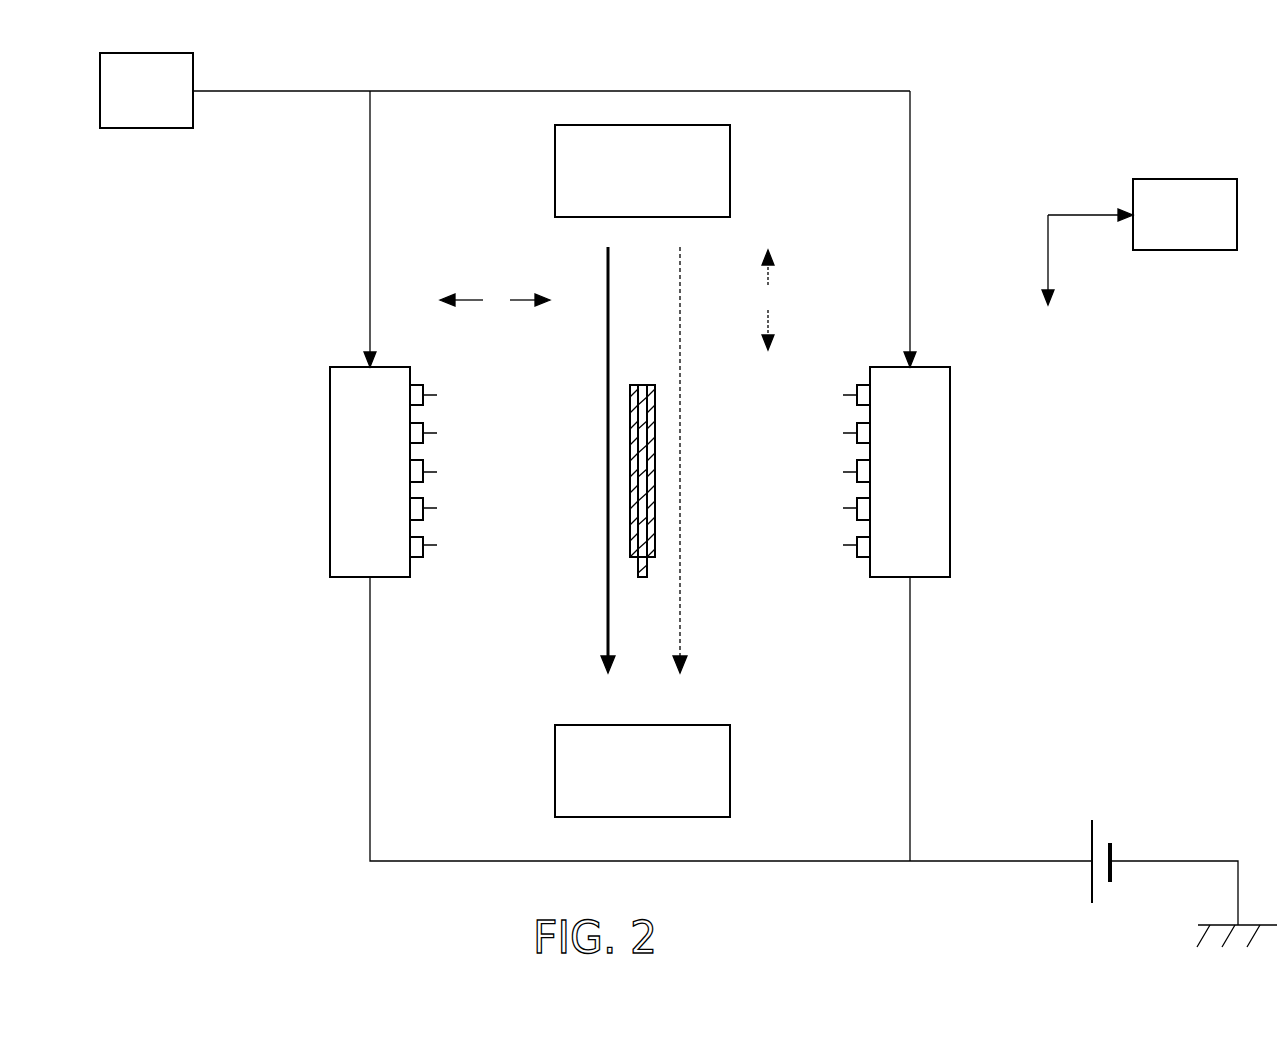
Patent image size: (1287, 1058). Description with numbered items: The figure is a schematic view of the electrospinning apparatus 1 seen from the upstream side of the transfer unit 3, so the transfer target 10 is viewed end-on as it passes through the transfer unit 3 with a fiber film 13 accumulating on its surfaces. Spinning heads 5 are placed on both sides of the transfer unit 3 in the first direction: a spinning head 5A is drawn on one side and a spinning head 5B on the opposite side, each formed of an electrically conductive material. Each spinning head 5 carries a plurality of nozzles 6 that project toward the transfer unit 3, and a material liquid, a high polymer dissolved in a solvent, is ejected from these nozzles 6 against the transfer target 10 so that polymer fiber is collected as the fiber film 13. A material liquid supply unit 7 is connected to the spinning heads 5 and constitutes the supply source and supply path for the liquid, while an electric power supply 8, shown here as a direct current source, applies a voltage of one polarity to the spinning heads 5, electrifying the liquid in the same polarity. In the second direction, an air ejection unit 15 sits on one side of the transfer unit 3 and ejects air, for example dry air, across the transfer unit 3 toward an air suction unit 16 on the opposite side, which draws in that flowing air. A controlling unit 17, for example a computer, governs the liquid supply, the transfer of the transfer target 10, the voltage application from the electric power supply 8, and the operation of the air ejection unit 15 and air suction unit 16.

The electrospinning apparatus 1 is at (1014, 72).
The transfer unit 3 is at (639, 449).
The spinning head 5 is at (630, 472).
The spinning head 5A is at (301, 490).
The spinning head 5B is at (971, 442).
The nozzle 6 is at (418, 463).
The material liquid supply unit 7 is at (100, 93).
The electric power supply 8 is at (1107, 829).
The transfer target 10 is at (652, 505).
The fiber film 13 is at (638, 452).
The air ejection unit 15 is at (730, 170).
The air suction unit 16 is at (730, 772).
The controlling unit 17 is at (1201, 179).